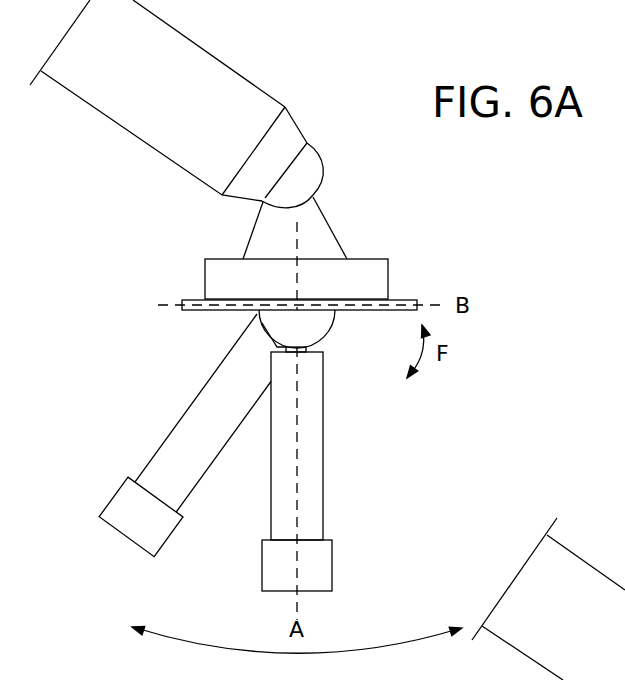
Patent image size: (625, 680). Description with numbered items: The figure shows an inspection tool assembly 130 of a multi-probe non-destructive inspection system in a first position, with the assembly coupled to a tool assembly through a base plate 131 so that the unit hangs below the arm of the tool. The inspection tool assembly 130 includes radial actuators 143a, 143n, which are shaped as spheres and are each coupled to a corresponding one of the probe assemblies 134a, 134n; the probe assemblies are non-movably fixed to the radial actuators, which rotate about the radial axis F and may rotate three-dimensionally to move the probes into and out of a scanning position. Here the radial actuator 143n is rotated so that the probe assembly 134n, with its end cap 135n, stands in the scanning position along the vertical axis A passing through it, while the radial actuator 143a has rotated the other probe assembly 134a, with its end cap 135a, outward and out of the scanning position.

The inspection tool assembly 130 is at (441, 268).
The base plate 131 is at (180, 301).
The probe assembly 134a is at (134, 410).
The probe assembly 134n is at (362, 470).
The first arm end cap 135a is at (126, 530).
The second arm end cap 135n is at (332, 563).
The radial actuator 143a is at (258, 312).
The radial actuator 143n is at (328, 344).